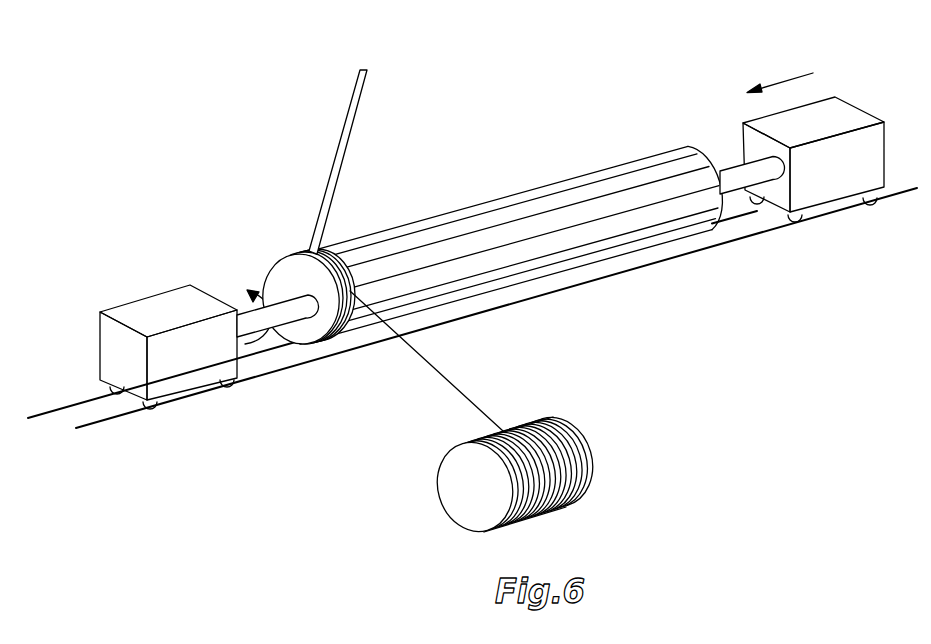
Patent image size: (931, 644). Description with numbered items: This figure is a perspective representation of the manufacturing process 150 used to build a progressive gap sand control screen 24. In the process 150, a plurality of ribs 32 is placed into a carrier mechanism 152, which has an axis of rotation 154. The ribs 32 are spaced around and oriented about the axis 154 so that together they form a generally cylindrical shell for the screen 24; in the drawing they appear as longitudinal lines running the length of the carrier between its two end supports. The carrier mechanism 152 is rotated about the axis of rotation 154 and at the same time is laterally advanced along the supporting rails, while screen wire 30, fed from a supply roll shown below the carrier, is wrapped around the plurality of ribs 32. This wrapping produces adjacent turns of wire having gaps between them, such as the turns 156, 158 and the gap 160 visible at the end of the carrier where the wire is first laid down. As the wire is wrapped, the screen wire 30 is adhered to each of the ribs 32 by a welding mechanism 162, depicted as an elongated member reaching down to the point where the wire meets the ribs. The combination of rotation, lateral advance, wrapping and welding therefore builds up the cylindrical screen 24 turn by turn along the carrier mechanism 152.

The progressive gap sand control screen 24 is at (303, 254).
The screen wire 30 is at (463, 392).
The ribs 32 is at (577, 178).
The manufacturing process 150 is at (502, 85).
The carrier mechanism 152 is at (702, 146).
The axis of rotation 154 is at (735, 170).
The turn 156 is at (323, 358).
The turn 158 is at (340, 352).
The gap 160 is at (395, 333).
The welding mechanism 162 is at (337, 150).